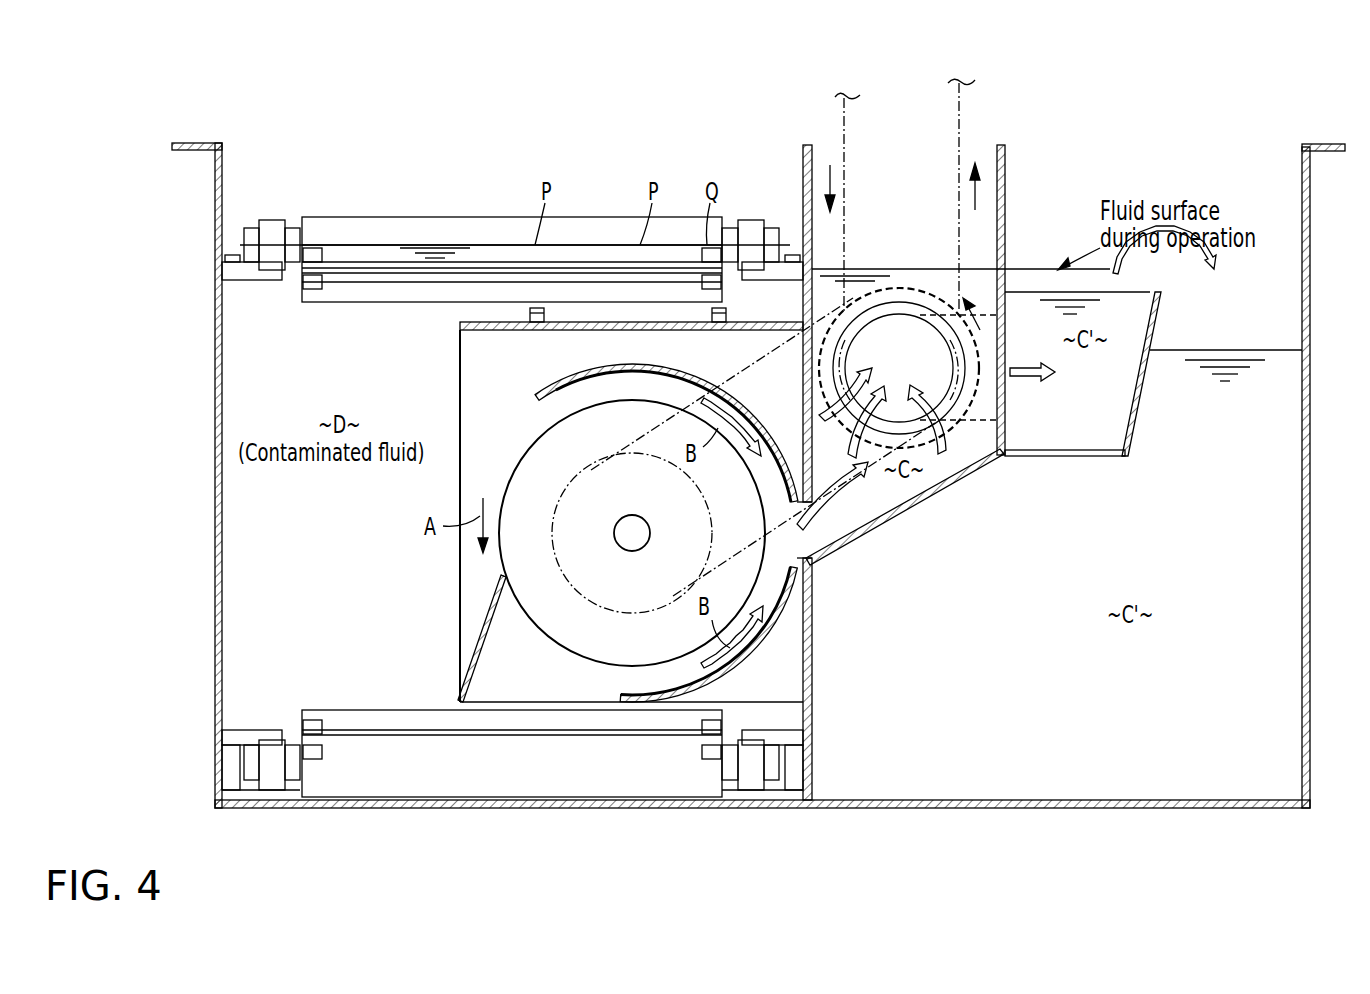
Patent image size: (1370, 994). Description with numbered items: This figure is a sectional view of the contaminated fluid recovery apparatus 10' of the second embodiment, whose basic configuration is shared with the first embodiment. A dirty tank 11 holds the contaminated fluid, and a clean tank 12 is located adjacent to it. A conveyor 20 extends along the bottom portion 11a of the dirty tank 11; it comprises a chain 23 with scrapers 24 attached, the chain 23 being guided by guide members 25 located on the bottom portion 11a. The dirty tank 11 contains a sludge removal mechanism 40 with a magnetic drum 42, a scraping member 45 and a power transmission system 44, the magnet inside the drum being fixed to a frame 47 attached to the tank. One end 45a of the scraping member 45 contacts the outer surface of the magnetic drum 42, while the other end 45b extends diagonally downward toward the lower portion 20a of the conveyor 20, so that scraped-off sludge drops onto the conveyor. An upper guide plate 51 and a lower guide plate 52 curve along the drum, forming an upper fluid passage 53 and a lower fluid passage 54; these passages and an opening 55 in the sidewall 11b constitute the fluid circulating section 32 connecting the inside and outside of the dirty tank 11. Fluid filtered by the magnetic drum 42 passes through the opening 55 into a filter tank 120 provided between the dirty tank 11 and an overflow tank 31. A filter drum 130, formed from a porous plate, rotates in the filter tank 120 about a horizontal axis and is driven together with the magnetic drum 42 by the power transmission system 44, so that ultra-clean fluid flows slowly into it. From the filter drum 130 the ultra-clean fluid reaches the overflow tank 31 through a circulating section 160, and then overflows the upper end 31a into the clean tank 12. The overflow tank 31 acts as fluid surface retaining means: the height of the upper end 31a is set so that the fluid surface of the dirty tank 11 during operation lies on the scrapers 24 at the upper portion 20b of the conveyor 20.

The contaminated fluid recovery apparatus 10' is at (676, 98).
The dirty tank 11 is at (215, 420).
The bottom portion 11a is at (408, 800).
The sidewall 11b is at (812, 632).
The clean tank 12 is at (1311, 445).
The conveyor 20 is at (412, 208).
The lower portion of the conveyor 20a is at (352, 699).
The upper portion of the conveyor 20b is at (367, 250).
The chain 23 is at (270, 780).
The scrapers 24 is at (488, 217).
The guide members 25 is at (250, 800).
The overflow tank 31 is at (1130, 428).
The upper end of the overflow tank 31a is at (1163, 292).
The fluid circulating section 32 is at (604, 390).
The sludge removal mechanism 40 is at (472, 592).
The magnetic drum 42 is at (527, 610).
The power transmission system 44 is at (962, 112).
The scraping member 45 is at (475, 637).
The one end of the scraping member 45a is at (503, 578).
The other end of the scraping member 45b is at (460, 702).
The frame 47 is at (460, 408).
The upper guide plate 51 is at (762, 400).
The lower guide plate 52 is at (715, 695).
The upper fluid passage 53 is at (680, 393).
The lower fluid passage 54 is at (633, 680).
The opening 55 is at (806, 548).
The filter tank 120 is at (907, 515).
The filter drum 130 is at (955, 430).
The circulating section 160 is at (1008, 412).